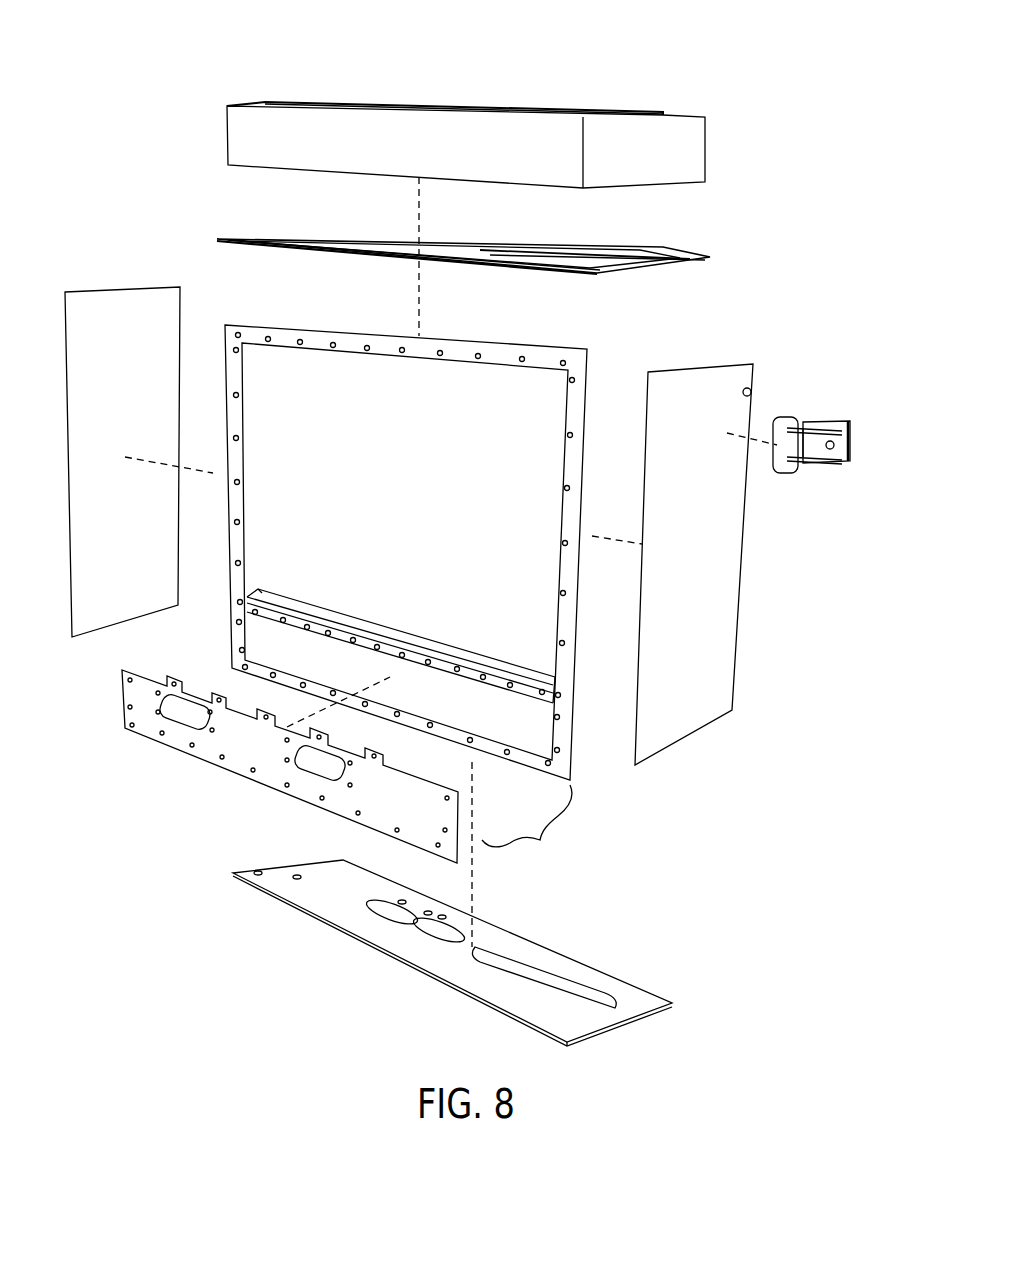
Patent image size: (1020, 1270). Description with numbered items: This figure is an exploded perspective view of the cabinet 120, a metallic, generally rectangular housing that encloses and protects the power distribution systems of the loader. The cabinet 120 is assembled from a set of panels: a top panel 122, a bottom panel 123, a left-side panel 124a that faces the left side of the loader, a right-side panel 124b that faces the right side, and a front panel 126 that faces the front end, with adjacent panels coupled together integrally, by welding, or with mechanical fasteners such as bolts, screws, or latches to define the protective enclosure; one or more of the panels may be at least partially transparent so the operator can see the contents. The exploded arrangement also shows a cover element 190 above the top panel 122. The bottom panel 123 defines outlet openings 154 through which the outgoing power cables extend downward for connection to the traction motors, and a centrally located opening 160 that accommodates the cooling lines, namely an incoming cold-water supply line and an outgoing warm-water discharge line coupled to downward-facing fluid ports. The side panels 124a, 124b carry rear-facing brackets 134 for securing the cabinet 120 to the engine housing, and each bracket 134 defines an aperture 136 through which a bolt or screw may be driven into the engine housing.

The cabinet 120 is at (653, 65).
The cover 190 is at (690, 125).
The top panel 122 is at (710, 258).
The right-side panel 124b is at (146, 414).
The left-side panel 124a is at (710, 628).
The bracket 134 is at (847, 422).
The aperture 136 is at (833, 457).
The front panel 126 is at (527, 829).
The bottom panel 123 is at (348, 897).
The outlet opening 154 is at (537, 975).
The opening 160 is at (440, 937).